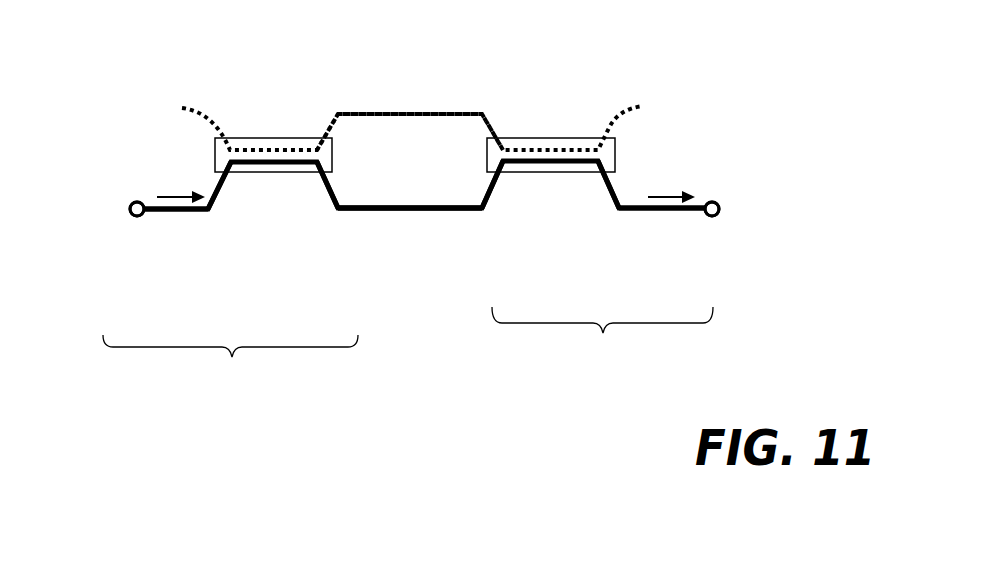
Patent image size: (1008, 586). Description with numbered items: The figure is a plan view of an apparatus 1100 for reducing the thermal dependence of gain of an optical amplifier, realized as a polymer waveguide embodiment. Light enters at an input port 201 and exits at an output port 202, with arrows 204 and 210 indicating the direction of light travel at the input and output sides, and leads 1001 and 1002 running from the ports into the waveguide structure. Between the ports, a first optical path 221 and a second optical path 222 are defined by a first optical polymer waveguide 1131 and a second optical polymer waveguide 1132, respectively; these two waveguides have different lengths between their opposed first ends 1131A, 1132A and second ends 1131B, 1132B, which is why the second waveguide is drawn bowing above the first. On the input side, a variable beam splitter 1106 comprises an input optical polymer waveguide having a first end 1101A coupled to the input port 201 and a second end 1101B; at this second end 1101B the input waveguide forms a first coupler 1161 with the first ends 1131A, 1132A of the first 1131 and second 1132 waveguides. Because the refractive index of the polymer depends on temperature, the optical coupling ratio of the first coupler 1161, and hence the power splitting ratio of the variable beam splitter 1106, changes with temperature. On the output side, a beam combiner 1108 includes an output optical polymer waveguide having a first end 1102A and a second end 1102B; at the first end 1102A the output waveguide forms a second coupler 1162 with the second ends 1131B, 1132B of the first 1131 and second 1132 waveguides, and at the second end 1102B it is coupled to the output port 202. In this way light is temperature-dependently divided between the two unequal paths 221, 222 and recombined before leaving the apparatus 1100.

The apparatus 1100 is at (737, 32).
The second optical path 222 is at (431, 105).
The second optical polymer waveguide 1132 is at (370, 113).
The first end of second optical polymer waveguide 1132A is at (315, 122).
The second end of second optical polymer waveguide 1132B is at (500, 118).
The first coupler 1161 is at (277, 137).
The second coupler 1162 is at (570, 137).
The input port 201 is at (130, 201).
The output port 202 is at (721, 203).
The current direction arrow 204 is at (183, 195).
The current direction arrow 210 is at (667, 197).
The first lead 1001 is at (183, 213).
The second lead 1002 is at (657, 213).
The first end of input optical polymer waveguide 1101A is at (143, 221).
The second end of input optical polymer waveguide 1101B is at (228, 188).
The first end of output optical polymer waveguide 1102A is at (634, 178).
The second end of output optical polymer waveguide 1102B is at (705, 220).
The first optical polymer waveguide 1131 is at (388, 213).
The first optical path 221 is at (427, 218).
The first end of first optical polymer waveguide 1131A is at (311, 188).
The second end of first optical polymer waveguide 1131B is at (507, 190).
The variable beam splitter 1106 is at (230, 364).
The beam combiner 1108 is at (602, 337).